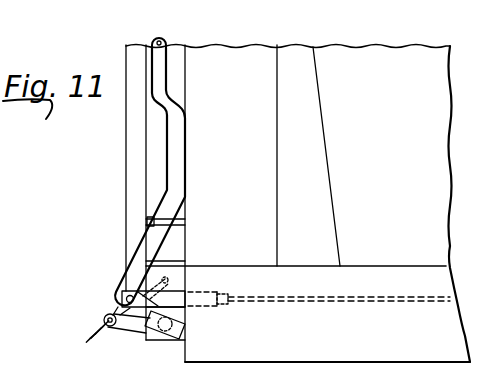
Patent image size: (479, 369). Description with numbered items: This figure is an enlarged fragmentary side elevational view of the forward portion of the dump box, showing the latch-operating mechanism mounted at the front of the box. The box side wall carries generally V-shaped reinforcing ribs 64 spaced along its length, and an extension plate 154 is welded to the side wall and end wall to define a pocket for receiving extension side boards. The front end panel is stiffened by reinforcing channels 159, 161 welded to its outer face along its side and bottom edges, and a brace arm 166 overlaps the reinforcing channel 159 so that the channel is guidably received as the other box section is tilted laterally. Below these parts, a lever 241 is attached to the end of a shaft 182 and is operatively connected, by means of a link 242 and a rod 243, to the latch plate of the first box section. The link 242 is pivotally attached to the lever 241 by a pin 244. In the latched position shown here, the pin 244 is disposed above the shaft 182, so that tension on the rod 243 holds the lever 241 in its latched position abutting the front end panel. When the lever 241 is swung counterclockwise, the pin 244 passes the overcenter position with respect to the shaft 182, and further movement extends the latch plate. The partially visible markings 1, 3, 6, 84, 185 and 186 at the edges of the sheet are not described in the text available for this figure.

The support block 1 is at (92, 268).
The cam plate 3 is at (92, 289).
The wall panel 6 is at (430, 118).
The reinforcing rib 64 is at (305, 127).
The connecting link 84 is at (65, 289).
The extension plate 154 is at (253, 90).
The reinforcing channel 159 is at (154, 184).
The reinforcing channel 161 is at (147, 222).
The brace arm 166 is at (135, 138).
The shaft 182 is at (0, 295).
The actuator rod 185 is at (0, 328).
The link arm 186 is at (0, 317).
The lever 241 is at (140, 248).
The link 242 is at (168, 296).
The rod 243 is at (298, 300).
The pin 244 is at (118, 292).